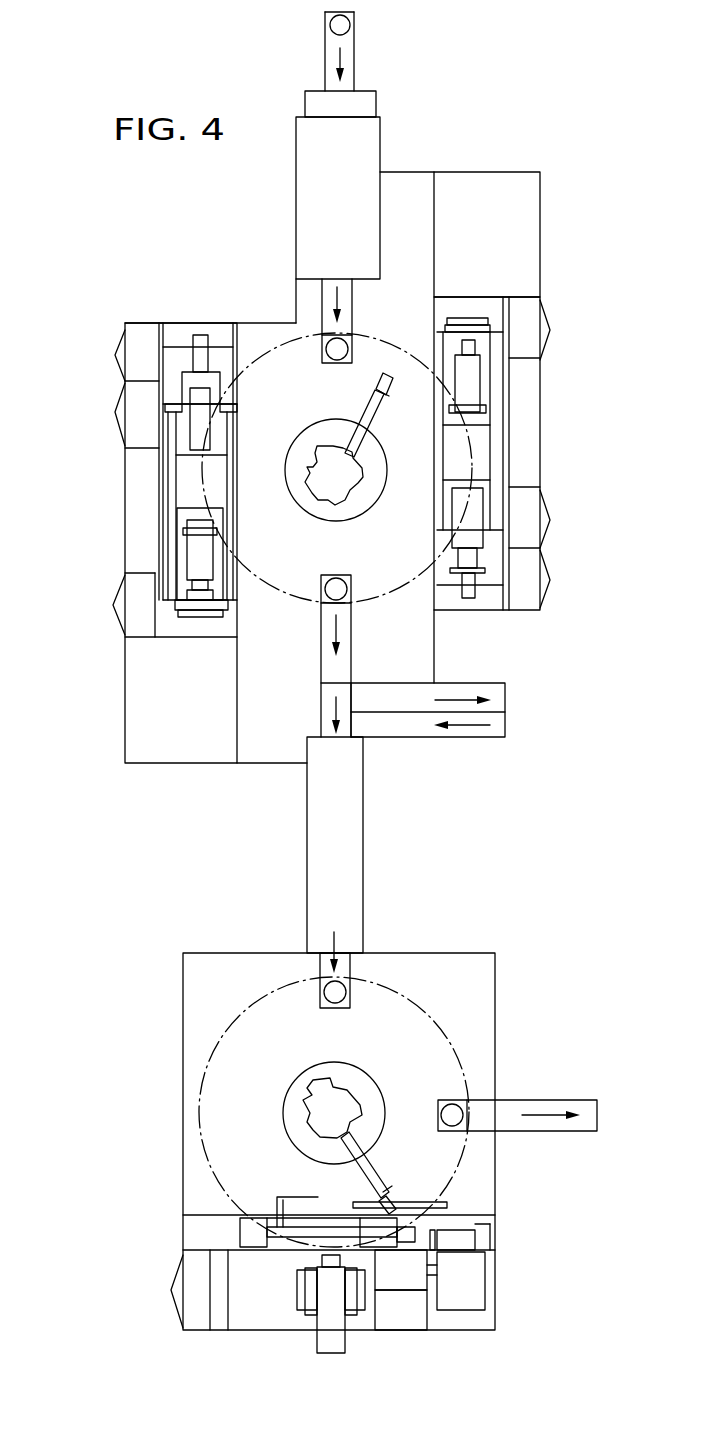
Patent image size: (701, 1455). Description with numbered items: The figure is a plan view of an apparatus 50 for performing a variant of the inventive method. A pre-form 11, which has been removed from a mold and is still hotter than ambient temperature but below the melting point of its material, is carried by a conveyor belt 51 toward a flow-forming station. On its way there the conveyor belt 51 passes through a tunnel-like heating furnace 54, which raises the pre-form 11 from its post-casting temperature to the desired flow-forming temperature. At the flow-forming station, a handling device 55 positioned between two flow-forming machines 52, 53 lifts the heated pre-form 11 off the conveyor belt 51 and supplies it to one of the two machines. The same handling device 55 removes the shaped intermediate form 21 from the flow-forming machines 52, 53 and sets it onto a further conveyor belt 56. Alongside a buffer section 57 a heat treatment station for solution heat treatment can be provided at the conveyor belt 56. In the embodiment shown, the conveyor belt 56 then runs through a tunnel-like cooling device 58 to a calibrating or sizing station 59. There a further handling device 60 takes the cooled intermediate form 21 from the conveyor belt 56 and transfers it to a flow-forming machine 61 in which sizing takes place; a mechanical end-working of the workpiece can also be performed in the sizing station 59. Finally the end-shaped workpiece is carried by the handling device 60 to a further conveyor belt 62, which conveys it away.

The pre-form 11 is at (352, 26).
The intermediate form 21 is at (326, 588).
The apparatus 50 is at (108, 282).
The conveyor belt 51 is at (350, 62).
The flow-forming machine 52 is at (183, 477).
The flow-forming machine 53 is at (495, 393).
The heating furnace 54 is at (366, 142).
The handling device 55 is at (356, 422).
The further conveyor belt 56 is at (331, 662).
The buffer section 57 is at (405, 728).
The cooling device 58 is at (350, 848).
The sizing station 59 is at (445, 976).
The further handling device 60 is at (301, 1100).
The flow-forming machine 61 is at (297, 1285).
The further conveyor belt 62 is at (510, 1110).